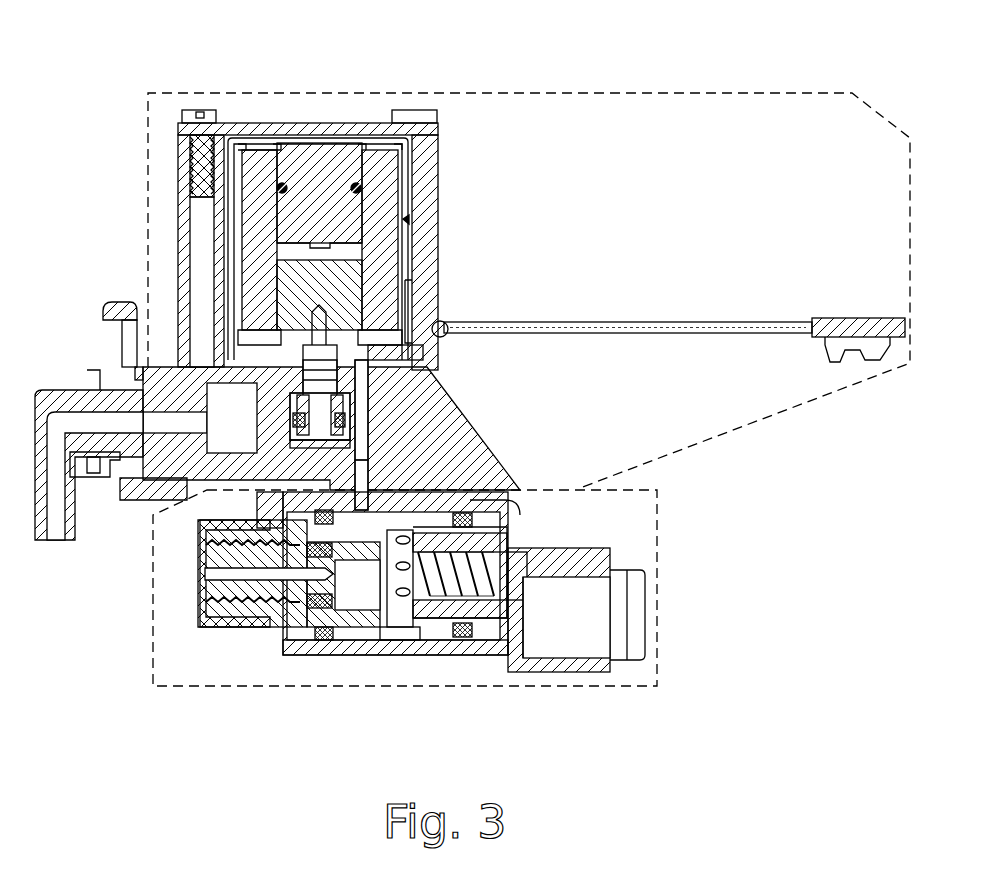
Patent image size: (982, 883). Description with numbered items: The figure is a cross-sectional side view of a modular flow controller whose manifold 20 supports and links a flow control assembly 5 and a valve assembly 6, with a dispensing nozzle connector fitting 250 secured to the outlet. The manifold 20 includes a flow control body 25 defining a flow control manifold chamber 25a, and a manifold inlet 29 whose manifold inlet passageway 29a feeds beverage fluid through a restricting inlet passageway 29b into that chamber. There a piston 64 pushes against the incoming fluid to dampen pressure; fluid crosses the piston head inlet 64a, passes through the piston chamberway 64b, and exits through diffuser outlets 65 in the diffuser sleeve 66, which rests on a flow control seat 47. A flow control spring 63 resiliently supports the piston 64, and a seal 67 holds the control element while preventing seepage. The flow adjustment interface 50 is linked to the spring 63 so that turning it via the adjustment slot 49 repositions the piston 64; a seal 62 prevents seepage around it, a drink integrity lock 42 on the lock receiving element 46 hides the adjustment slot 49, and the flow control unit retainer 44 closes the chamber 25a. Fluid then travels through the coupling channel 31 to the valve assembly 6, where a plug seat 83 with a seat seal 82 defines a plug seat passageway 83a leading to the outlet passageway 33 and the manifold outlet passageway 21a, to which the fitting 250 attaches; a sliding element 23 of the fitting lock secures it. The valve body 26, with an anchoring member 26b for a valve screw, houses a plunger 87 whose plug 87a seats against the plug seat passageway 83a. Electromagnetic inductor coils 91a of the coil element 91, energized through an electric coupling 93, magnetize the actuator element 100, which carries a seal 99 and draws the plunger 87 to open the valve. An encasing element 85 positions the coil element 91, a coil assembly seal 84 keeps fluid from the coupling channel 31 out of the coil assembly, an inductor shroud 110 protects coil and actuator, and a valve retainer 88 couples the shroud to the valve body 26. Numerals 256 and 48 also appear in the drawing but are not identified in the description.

The valve assembly 6 is at (558, 84).
The flow control assembly 5 is at (146, 657).
The valve retainer 88 is at (290, 128).
The actuator element 100 is at (320, 150).
The seal 99 is at (362, 188).
The inductor shroud 110 is at (413, 190).
The coil element 91 is at (410, 220).
The electromagnetic inductor coils 91a is at (253, 241).
The plunger 87 is at (346, 271).
The valve body 26 is at (426, 292).
The anchoring member 26b is at (178, 258).
The encasing element 85 is at (408, 340).
The electric coupling 93 is at (608, 322).
The coil assembly seal 84 is at (382, 367).
The plug 87a is at (352, 404).
The plug seat 83 is at (292, 414).
The plug seat passageway 83a is at (303, 448).
The outlet passageway 33 is at (340, 452).
The coupling channel 31 is at (362, 473).
The manifold 20 is at (467, 422).
The manifold outlet passageway 21a is at (232, 418).
The sliding element 23 is at (118, 300).
The dispensing nozzle connector fitting 250 is at (48, 376).
The fitting passage 256 is at (92, 420).
The seat seal 82 is at (297, 427).
The flow control unit retainer 44 is at (278, 657).
The diffuser sleeve 66 is at (490, 513).
The flow control body 25 is at (457, 655).
The flow control manifold chamber 25a is at (398, 640).
The flow control seat 47 is at (372, 627).
The seal 62 is at (313, 607).
The seal 48 is at (327, 633).
The seal 67 is at (463, 638).
The diffuser outlets 65 is at (398, 627).
The flow control spring 63 is at (442, 598).
The piston 64 is at (480, 553).
The piston chamberway 64b is at (495, 543).
The piston head inlet 64a is at (505, 580).
The manifold inlet 29 is at (560, 673).
The manifold inlet passageway 29a is at (566, 617).
The inlet passageway 29b is at (517, 602).
The drink integrity lock 42 is at (205, 615).
The lock receiving element 46 is at (243, 625).
The flow adjustment interface 50 is at (205, 558).
The adjustment slot 49 is at (208, 575).